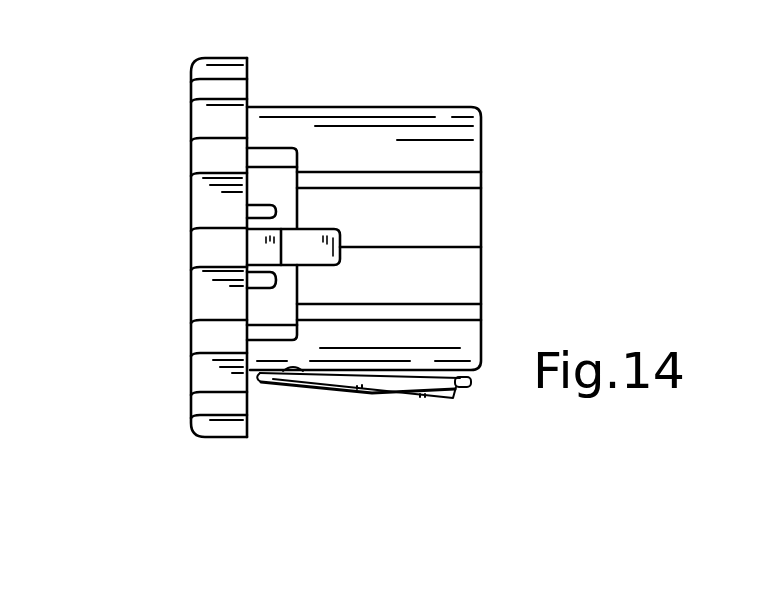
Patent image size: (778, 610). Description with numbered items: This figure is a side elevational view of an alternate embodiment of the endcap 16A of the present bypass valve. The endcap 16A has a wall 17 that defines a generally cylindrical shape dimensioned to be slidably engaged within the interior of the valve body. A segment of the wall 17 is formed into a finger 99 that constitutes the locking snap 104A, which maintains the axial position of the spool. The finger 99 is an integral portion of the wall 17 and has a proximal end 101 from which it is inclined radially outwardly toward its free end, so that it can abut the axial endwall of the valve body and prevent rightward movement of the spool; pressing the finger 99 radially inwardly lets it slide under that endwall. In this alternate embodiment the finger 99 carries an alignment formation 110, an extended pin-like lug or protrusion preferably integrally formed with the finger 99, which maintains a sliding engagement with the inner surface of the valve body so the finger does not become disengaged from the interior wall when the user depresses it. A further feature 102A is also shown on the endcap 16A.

The endcap 16A is at (212, 437).
The wall 17 is at (430, 152).
The finger 99 is at (378, 386).
The proximal end 101 is at (263, 384).
The slider 102A is at (303, 244).
The locking snap 104A is at (437, 398).
The alignment formation 110 is at (467, 388).